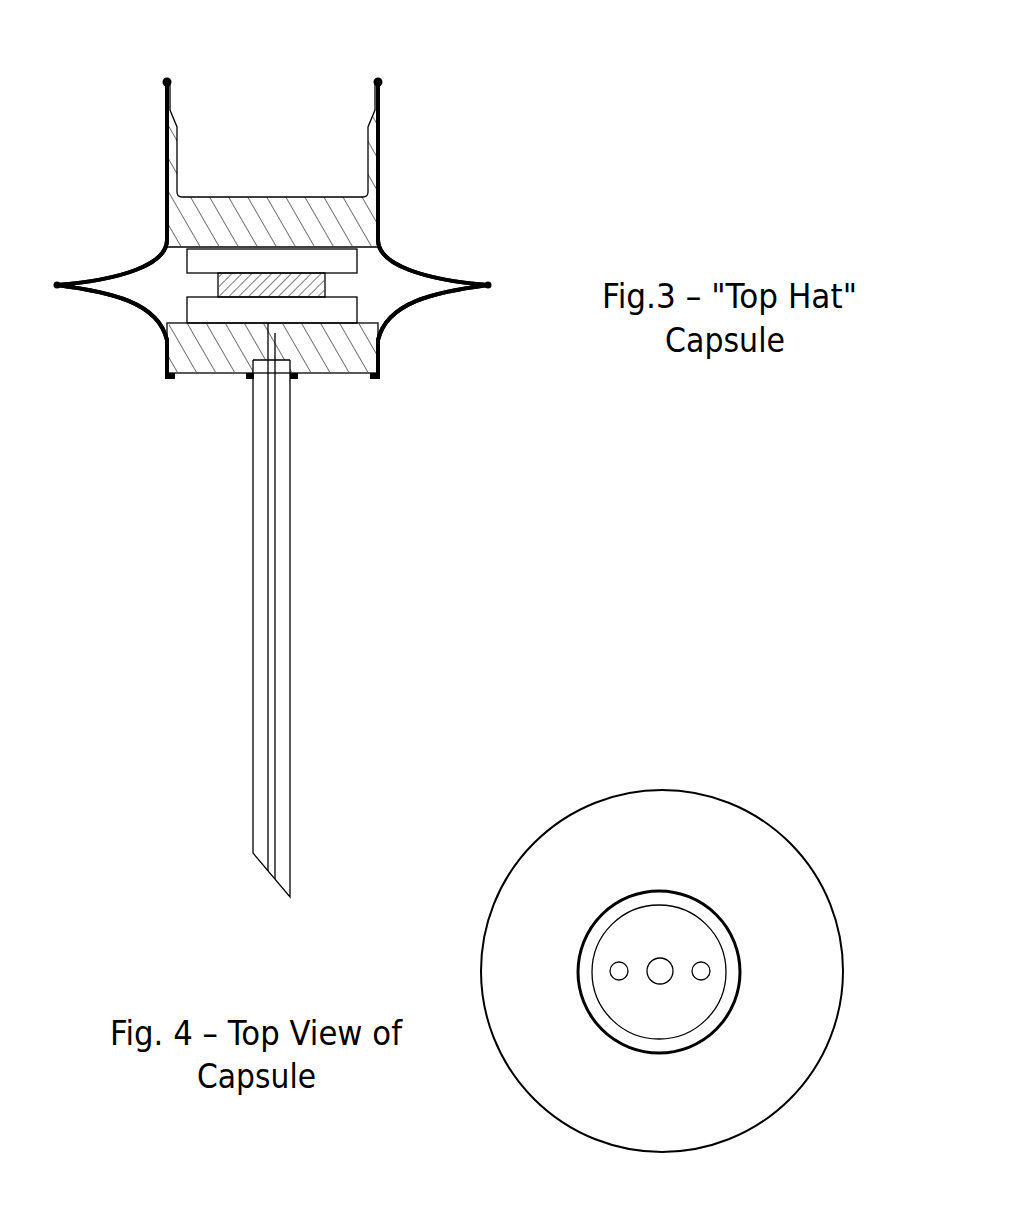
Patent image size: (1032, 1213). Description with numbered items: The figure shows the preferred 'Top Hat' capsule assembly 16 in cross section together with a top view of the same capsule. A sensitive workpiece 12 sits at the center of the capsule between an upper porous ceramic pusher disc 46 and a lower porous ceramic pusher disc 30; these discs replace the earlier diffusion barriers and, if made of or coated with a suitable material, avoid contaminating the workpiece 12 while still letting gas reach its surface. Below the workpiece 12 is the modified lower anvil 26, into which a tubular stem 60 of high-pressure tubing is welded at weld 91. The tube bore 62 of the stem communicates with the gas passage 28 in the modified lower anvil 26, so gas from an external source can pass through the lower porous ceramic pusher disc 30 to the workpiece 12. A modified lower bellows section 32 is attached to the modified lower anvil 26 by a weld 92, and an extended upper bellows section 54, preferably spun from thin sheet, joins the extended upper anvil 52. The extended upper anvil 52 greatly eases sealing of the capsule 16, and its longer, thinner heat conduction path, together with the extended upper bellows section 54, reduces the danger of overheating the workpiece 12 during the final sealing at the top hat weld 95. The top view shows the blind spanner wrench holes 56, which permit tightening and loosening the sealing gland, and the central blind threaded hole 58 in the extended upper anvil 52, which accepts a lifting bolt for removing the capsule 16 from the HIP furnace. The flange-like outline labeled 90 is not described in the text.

In FIG. 3, the Top Hat capsule assembly 16 is at (141, 249).
In FIG. 3, the workpiece 12 is at (303, 287).
In FIG. 3, the modified lower anvil 26 is at (340, 360).
In FIG. 3, the gas passage 28 is at (274, 334).
In FIG. 3, the lower porous ceramic pusher disc 30 is at (333, 312).
In FIG. 3, the modified lower bellows section 32 is at (432, 302).
In FIG. 3, the upper porous ceramic pusher disc 46 is at (342, 258).
In FIG. 3, the extended upper anvil 52 is at (315, 225).
In FIG. 3, the extended upper bellows section 54 is at (410, 262).
In FIG. 4, the blind spanner wrench holes 56 is at (704, 960).
In FIG. 4, the blind threaded hole 58 is at (661, 950).
In FIG. 3, the tubular stem 60 is at (280, 570).
In FIG. 3, the tube bore 62 is at (272, 643).
In FIG. 3, the flange disk 90 is at (55, 297).
In FIG. 4, the flange disk 90 is at (648, 784).
In FIG. 3, the weld 91 is at (250, 377).
In FIG. 3, the welds 92 is at (170, 382).
In FIG. 3, the top hat weld 95 is at (167, 68).
In FIG. 4, the top hat weld 95 is at (654, 887).